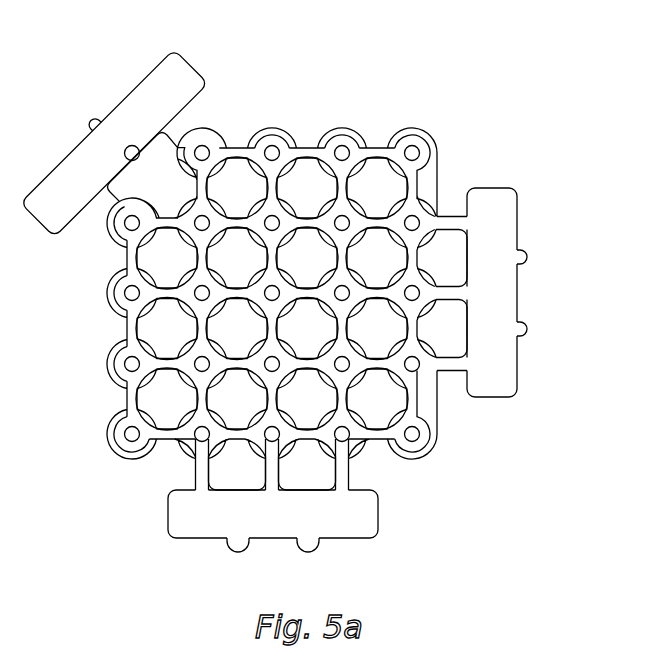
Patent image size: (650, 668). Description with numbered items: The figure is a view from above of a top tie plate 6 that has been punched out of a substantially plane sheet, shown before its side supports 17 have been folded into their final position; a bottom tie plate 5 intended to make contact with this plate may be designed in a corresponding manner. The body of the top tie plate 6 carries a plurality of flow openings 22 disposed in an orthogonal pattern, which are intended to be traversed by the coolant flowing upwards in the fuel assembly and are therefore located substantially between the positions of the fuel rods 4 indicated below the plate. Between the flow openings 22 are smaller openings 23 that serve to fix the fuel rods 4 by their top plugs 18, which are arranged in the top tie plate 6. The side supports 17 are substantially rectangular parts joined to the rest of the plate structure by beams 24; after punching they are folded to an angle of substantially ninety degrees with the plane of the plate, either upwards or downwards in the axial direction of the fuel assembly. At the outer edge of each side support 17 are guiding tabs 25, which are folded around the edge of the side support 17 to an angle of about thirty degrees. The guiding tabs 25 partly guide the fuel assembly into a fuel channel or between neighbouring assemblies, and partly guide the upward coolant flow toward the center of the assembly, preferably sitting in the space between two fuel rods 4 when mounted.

The fuel rod 4 is at (437, 440).
The bottom tie plate 5 is at (299, 297).
The top tie plate 6 is at (299, 297).
The side support 17 is at (350, 520).
The top plug 18 is at (424, 447).
The flow opening 22 is at (378, 400).
The smaller opening 23 is at (412, 436).
The beam 24 is at (273, 468).
The guiding tab 25 is at (527, 334).